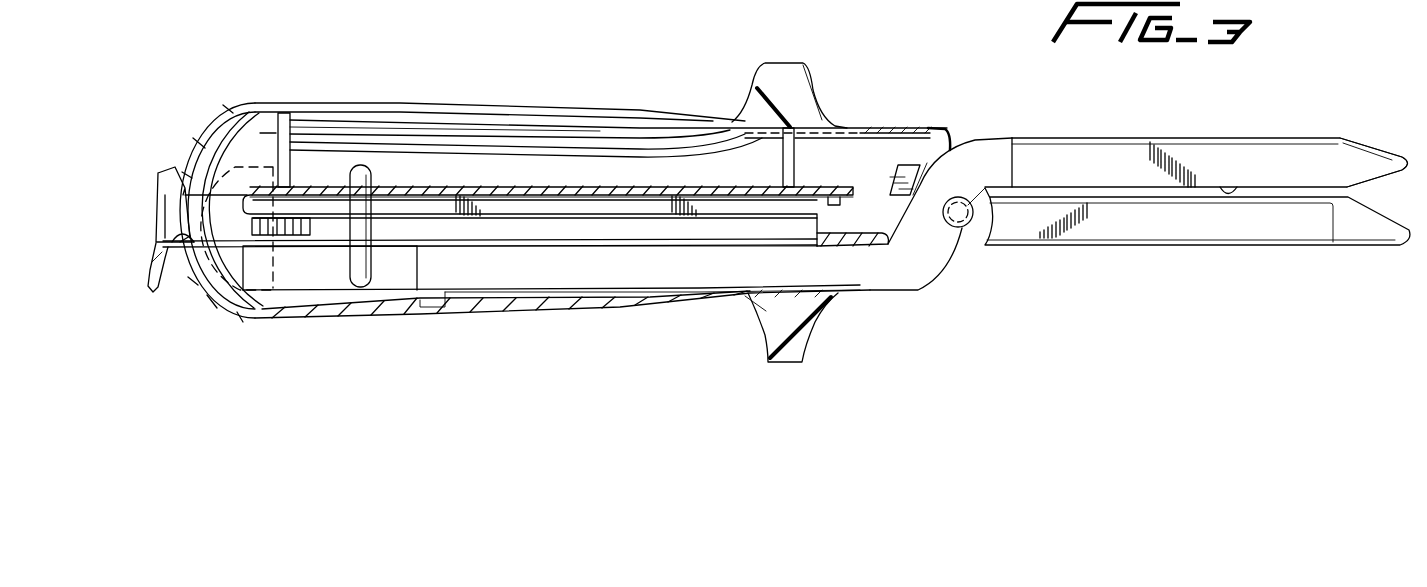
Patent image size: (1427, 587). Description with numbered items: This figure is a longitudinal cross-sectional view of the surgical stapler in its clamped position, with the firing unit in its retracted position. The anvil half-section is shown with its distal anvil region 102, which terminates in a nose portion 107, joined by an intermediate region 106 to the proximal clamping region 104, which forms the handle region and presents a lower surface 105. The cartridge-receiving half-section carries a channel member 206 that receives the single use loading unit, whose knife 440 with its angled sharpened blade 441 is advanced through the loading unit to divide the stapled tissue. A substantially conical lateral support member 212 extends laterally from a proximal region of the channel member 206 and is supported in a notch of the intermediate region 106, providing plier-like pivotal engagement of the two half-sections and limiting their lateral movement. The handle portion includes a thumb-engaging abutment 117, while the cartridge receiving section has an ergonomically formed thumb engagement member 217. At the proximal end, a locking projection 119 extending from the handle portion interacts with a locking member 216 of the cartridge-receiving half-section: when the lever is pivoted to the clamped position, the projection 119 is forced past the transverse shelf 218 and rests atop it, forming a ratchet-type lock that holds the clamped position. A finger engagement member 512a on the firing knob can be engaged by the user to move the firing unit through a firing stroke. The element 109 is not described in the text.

The proximal clamping region 104 is at (468, 329).
The lower surface 105 is at (604, 307).
The intermediate region 106 is at (923, 253).
The distal anvil region 102 is at (1110, 162).
The nose portion 107 is at (1390, 163).
The jaw insert 109 is at (1237, 187).
The channel member 206 is at (1180, 230).
The lateral support member 212 is at (962, 217).
The locking member 216 is at (158, 214).
The shelf 218 is at (148, 262).
The locking projection 119 is at (186, 248).
The finger engagement member 512a is at (360, 165).
The thumb engagement member 217 is at (757, 90).
The thumb-engaging abutment 117 is at (763, 317).
The knife 440 is at (887, 185).
The blade 441 is at (930, 142).